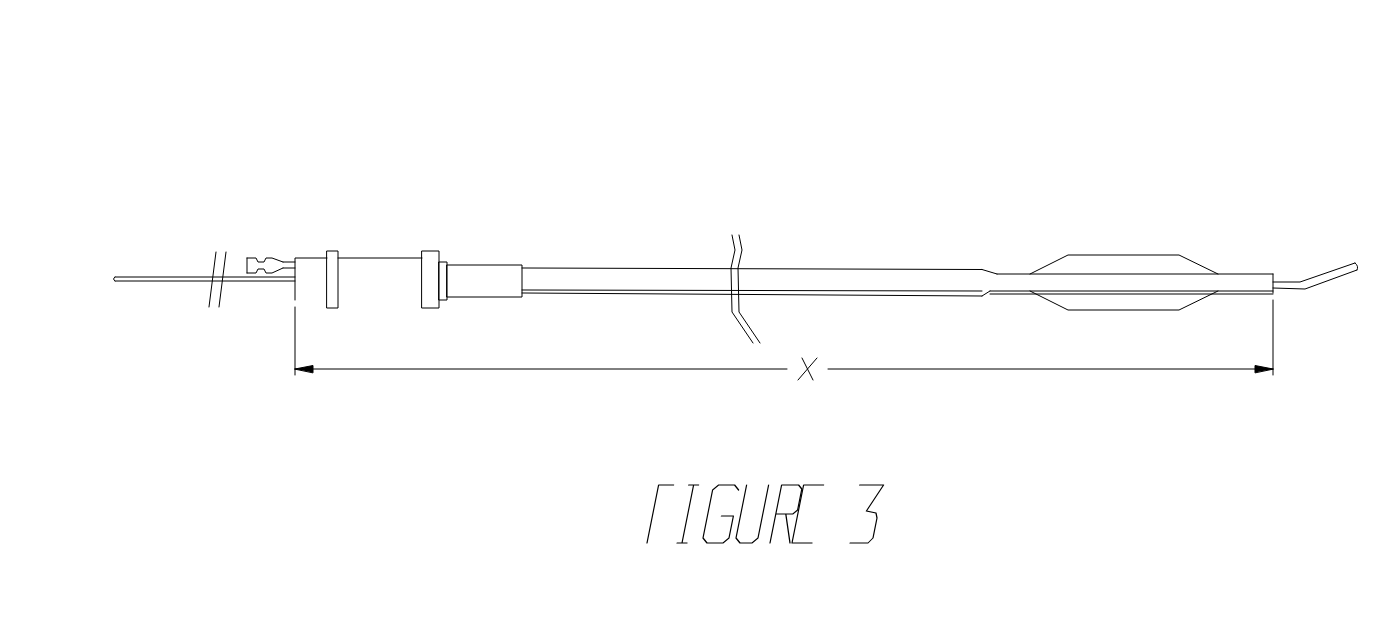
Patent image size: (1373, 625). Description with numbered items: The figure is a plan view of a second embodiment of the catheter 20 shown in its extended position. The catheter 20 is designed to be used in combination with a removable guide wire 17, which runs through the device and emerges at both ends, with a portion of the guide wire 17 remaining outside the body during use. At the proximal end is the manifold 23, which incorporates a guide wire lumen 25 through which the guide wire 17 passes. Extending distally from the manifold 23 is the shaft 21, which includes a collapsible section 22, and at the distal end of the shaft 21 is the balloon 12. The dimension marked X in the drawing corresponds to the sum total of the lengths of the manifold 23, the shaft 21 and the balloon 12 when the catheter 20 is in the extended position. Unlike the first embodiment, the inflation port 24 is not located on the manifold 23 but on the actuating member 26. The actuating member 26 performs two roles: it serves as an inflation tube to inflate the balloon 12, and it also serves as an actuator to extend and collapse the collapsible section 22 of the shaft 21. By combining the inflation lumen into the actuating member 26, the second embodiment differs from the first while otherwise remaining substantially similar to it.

The balloon 12 is at (1125, 234).
The guide wire 17 is at (736, 208).
The catheter 20 is at (736, 194).
The shaft 21 is at (759, 250).
The collapsible section 22 is at (946, 226).
The manifold 23 is at (384, 195).
The inflation port 24 is at (272, 191).
The guide wire lumen 25 is at (408, 238).
The actuating member 26 is at (298, 218).